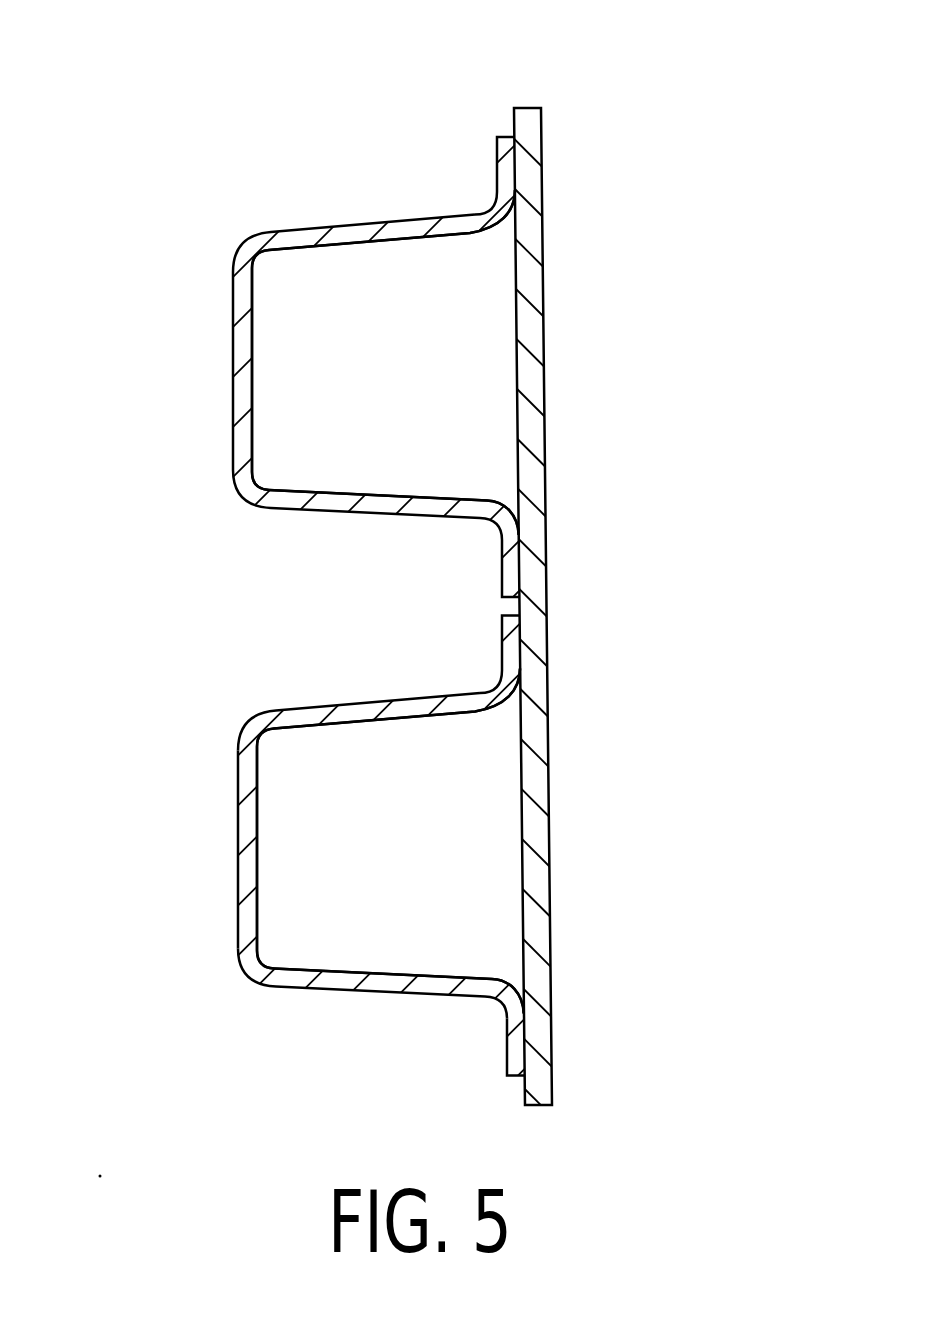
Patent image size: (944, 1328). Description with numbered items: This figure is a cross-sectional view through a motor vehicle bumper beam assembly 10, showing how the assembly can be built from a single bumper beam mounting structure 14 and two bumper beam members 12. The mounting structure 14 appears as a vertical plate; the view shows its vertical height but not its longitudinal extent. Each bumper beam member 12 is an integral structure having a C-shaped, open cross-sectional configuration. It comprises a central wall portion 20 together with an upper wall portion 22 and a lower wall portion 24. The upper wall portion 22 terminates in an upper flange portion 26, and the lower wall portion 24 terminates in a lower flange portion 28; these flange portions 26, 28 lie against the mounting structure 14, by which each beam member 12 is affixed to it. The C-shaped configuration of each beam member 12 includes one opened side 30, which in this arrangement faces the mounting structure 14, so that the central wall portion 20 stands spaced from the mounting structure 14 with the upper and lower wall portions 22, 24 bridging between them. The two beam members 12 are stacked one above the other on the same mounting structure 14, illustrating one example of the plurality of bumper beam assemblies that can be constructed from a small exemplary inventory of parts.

The bumper beam assembly 10 is at (615, 140).
The bumper beam member 12 is at (472, 576).
The bumper beam mounting structure 14 is at (535, 382).
The central wall portion 20 is at (237, 300).
The upper wall portion 22 is at (345, 233).
The lower wall portion 24 is at (330, 511).
The upper flange portion 26 is at (505, 168).
The lower flange portion 28 is at (502, 565).
The opened side 30 is at (442, 318).